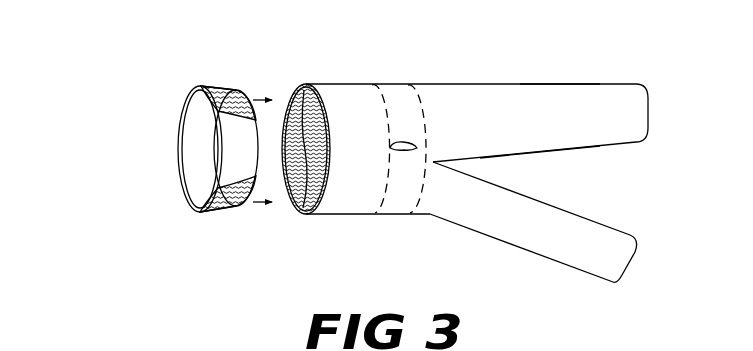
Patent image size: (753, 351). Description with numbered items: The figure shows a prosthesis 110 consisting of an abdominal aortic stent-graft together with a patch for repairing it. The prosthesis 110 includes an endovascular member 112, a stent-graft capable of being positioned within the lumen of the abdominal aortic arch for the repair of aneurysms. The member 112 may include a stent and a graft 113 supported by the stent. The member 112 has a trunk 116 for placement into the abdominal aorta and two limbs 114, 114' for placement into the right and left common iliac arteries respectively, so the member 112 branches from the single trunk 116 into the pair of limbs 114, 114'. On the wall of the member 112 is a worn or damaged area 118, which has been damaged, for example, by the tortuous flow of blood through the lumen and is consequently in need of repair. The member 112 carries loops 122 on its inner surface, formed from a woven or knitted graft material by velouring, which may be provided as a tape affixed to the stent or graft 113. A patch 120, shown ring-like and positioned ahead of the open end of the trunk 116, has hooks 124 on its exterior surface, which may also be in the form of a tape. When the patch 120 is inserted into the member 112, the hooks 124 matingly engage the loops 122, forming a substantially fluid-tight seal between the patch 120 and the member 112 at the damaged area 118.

The prosthesis 110 is at (112, 90).
The endovascular member 112 is at (626, 72).
The graft 113 is at (582, 135).
The limb 114 is at (533, 239).
The limb 114' is at (546, 52).
The trunk 116 is at (322, 82).
The damaged area 118 is at (403, 142).
The patch 120 is at (180, 178).
The loops 122 is at (308, 213).
The hooks 124 is at (228, 212).